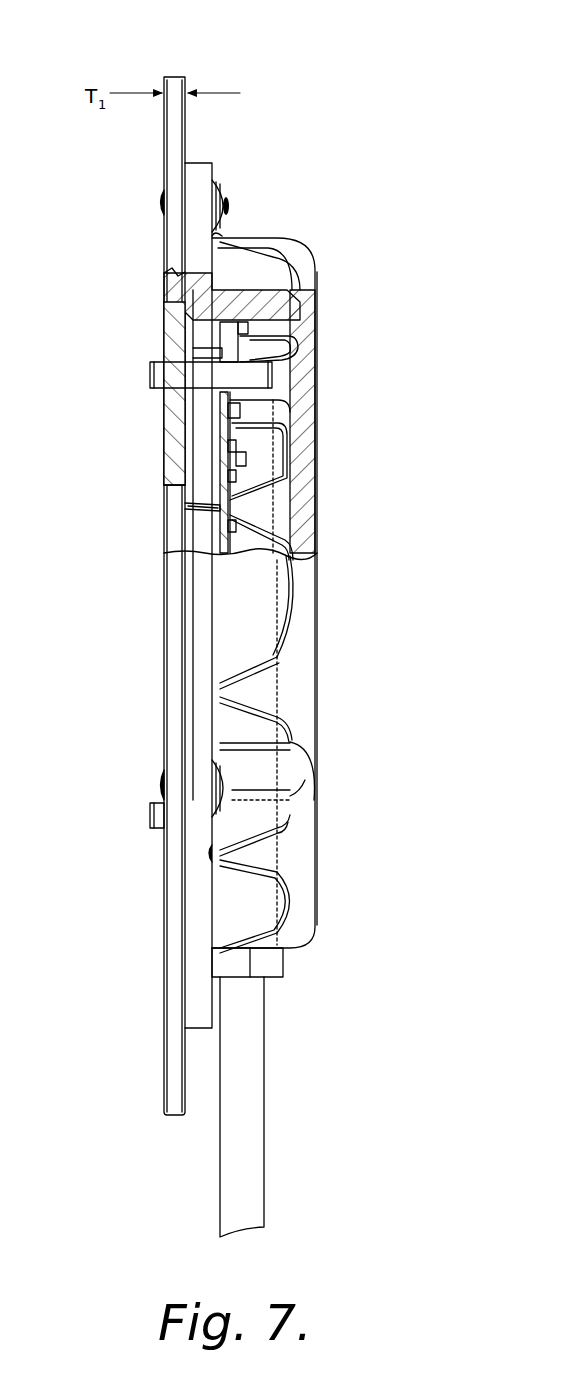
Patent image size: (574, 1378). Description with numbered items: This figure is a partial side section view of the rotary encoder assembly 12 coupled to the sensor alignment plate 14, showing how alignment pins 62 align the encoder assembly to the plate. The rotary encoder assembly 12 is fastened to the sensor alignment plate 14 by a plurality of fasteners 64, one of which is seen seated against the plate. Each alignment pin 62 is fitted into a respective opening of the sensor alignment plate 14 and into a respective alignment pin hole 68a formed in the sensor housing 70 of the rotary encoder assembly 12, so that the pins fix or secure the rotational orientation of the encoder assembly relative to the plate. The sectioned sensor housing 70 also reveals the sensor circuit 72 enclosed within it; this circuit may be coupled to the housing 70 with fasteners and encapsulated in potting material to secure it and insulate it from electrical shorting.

The sensor alignment plate 14 is at (188, 75).
The rotary encoder assembly 12 is at (317, 257).
The alignment pin 62 is at (150, 362).
The fastener 64 is at (230, 180).
The alignment pin hole 68a is at (284, 340).
The sensor housing 70 is at (318, 590).
The sensor circuit 72 is at (216, 482).